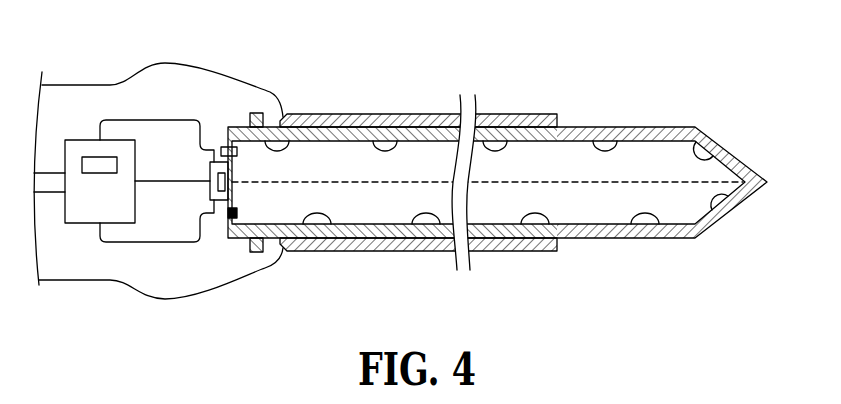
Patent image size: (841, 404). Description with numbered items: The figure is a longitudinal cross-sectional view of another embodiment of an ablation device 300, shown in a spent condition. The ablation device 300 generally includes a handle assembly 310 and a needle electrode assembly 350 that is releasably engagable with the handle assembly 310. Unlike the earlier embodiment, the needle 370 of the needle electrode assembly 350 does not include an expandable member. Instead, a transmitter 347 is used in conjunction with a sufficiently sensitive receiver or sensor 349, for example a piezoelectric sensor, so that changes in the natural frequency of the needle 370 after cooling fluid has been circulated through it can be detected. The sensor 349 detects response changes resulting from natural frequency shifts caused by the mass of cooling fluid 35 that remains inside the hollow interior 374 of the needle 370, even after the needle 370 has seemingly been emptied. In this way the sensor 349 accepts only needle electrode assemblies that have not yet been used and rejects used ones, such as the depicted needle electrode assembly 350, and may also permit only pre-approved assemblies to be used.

The ablation device 300 is at (525, 56).
The handle assembly 310 is at (68, 84).
The transmitter 347 is at (215, 168).
The sensor 349 is at (216, 186).
The needle electrode assembly 350 is at (385, 115).
The needle 370 is at (662, 127).
The hollow interior 374 is at (606, 205).
The cooling fluid 35 is at (322, 213).